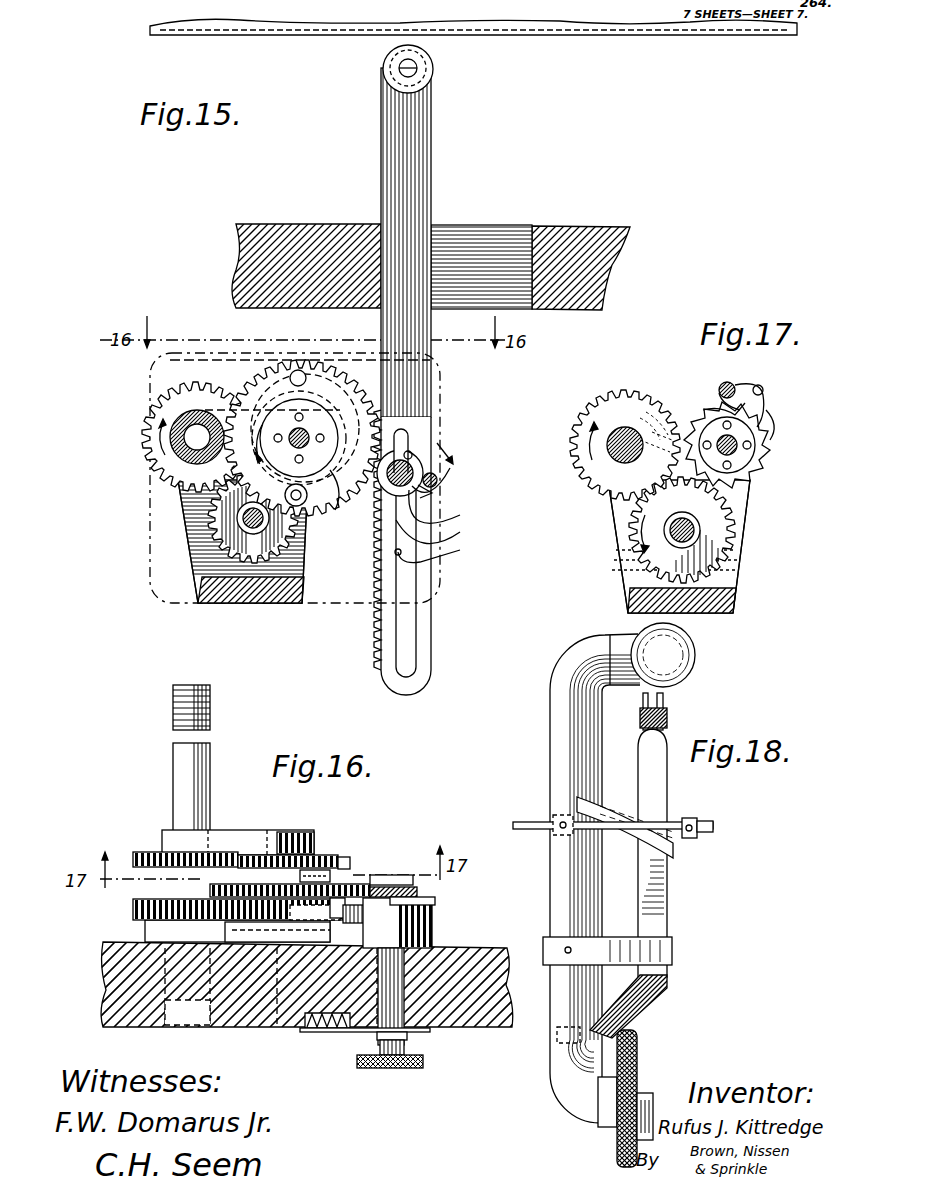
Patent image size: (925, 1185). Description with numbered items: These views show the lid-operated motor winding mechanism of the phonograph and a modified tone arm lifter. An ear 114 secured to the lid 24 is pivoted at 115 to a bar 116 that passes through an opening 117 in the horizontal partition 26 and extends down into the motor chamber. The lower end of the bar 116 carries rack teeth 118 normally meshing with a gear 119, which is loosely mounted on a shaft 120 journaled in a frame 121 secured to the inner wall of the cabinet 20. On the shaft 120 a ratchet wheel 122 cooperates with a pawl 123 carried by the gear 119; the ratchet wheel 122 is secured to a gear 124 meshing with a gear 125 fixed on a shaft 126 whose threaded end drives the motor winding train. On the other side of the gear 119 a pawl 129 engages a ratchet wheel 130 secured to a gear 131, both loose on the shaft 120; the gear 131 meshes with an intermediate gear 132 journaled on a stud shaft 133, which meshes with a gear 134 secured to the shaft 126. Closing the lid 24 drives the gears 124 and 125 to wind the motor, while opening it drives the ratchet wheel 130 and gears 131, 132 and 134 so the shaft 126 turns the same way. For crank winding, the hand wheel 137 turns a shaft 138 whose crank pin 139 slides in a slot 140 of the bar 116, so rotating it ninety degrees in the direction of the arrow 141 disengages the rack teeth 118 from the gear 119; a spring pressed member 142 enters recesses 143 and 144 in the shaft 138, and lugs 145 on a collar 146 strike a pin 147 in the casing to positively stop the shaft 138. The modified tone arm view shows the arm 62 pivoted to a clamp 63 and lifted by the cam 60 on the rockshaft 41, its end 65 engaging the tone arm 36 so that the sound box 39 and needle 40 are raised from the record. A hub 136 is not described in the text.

In FIG. 15, the lid 24 is at (288, 34).
In FIG. 15, the ear 114 is at (385, 54).
In FIG. 15, the pivot 115 is at (418, 66).
In FIG. 15, the bar 116 is at (431, 200).
In FIG. 16, the bar 116 is at (425, 895).
In FIG. 15, the opening 117 is at (497, 236).
In FIG. 15, the horizontal partition 26 is at (603, 240).
In FIG. 15, the rack teeth 118 is at (373, 596).
In FIG. 15, the gear 119 is at (335, 508).
In FIG. 16, the gear 119 is at (350, 886).
In FIG. 15, the shaft 120 is at (296, 435).
In FIG. 17, the shaft 120 is at (733, 443).
In FIG. 16, the shaft 120 is at (296, 831).
In FIG. 15, the frame 121 is at (308, 580).
In FIG. 17, the frame 121 is at (728, 568).
In FIG. 16, the frame 121 is at (227, 829).
In FIG. 15, the ratchet wheel 122 is at (331, 362).
In FIG. 16, the ratchet wheel 122 is at (350, 908).
In FIG. 15, the pawl 123 is at (304, 503).
In FIG. 15, the gear 124 is at (259, 400).
In FIG. 16, the gear 124 is at (310, 915).
In FIG. 15, the gear 125 is at (163, 470).
In FIG. 16, the gear 125 is at (133, 911).
In FIG. 17, the shaft 126 is at (618, 458).
In FIG. 16, the shaft 126 is at (178, 788).
In FIG. 17, the pawl 129 is at (741, 384).
In FIG. 16, the pawl 129 is at (322, 856).
In FIG. 17, the ratchet wheel 130 is at (758, 473).
In FIG. 16, the ratchet wheel 130 is at (273, 854).
In FIG. 17, the gear 131 is at (705, 412).
In FIG. 16, the gear 131 is at (342, 857).
In FIG. 15, the intermediate gear 132 is at (222, 523).
In FIG. 17, the intermediate gear 132 is at (714, 540).
In FIG. 15, the stud shaft 133 is at (243, 518).
In FIG. 17, the stud shaft 133 is at (690, 526).
In FIG. 16, the stud shaft 133 is at (210, 891).
In FIG. 17, the gear 134 is at (620, 403).
In FIG. 16, the gear 134 is at (143, 852).
In FIG. 15, the gear hub 136 is at (201, 420).
In FIG. 16, the gear hub 136 is at (277, 932).
In FIG. 16, the hand wheel 137 is at (402, 1068).
In FIG. 15, the shaft 138 is at (444, 531).
In FIG. 16, the shaft 138 is at (432, 946).
In FIG. 15, the crank pin 139 is at (420, 446).
In FIG. 16, the crank pin 139 is at (404, 885).
In FIG. 15, the slot 140 is at (443, 549).
In FIG. 15, the arrow 141 is at (453, 448).
In FIG. 16, the spring pressed member 142 is at (345, 1030).
In FIG. 16, the recess 143 is at (372, 1040).
In FIG. 16, the recess 144 is at (432, 1032).
In FIG. 15, the lugs 145 is at (410, 430).
In FIG. 16, the lugs 145 is at (370, 913).
In FIG. 15, the collar 146 is at (450, 506).
In FIG. 15, the pin 147 is at (451, 470).
In FIG. 16, the pin 147 is at (432, 903).
In FIG. 16, the cabinet 20 is at (505, 962).
In FIG. 18, the tone arm 36 is at (566, 772).
In FIG. 18, the rockshaft 41 is at (524, 821).
In FIG. 18, the cam 60 is at (675, 851).
In FIG. 18, the arm 62 is at (668, 808).
In FIG. 18, the clamp 63 is at (668, 716).
In FIG. 18, the end 65 is at (615, 1032).
In FIG. 18, the sound box 39 is at (640, 1062).
In FIG. 18, the needle 40 is at (617, 1140).